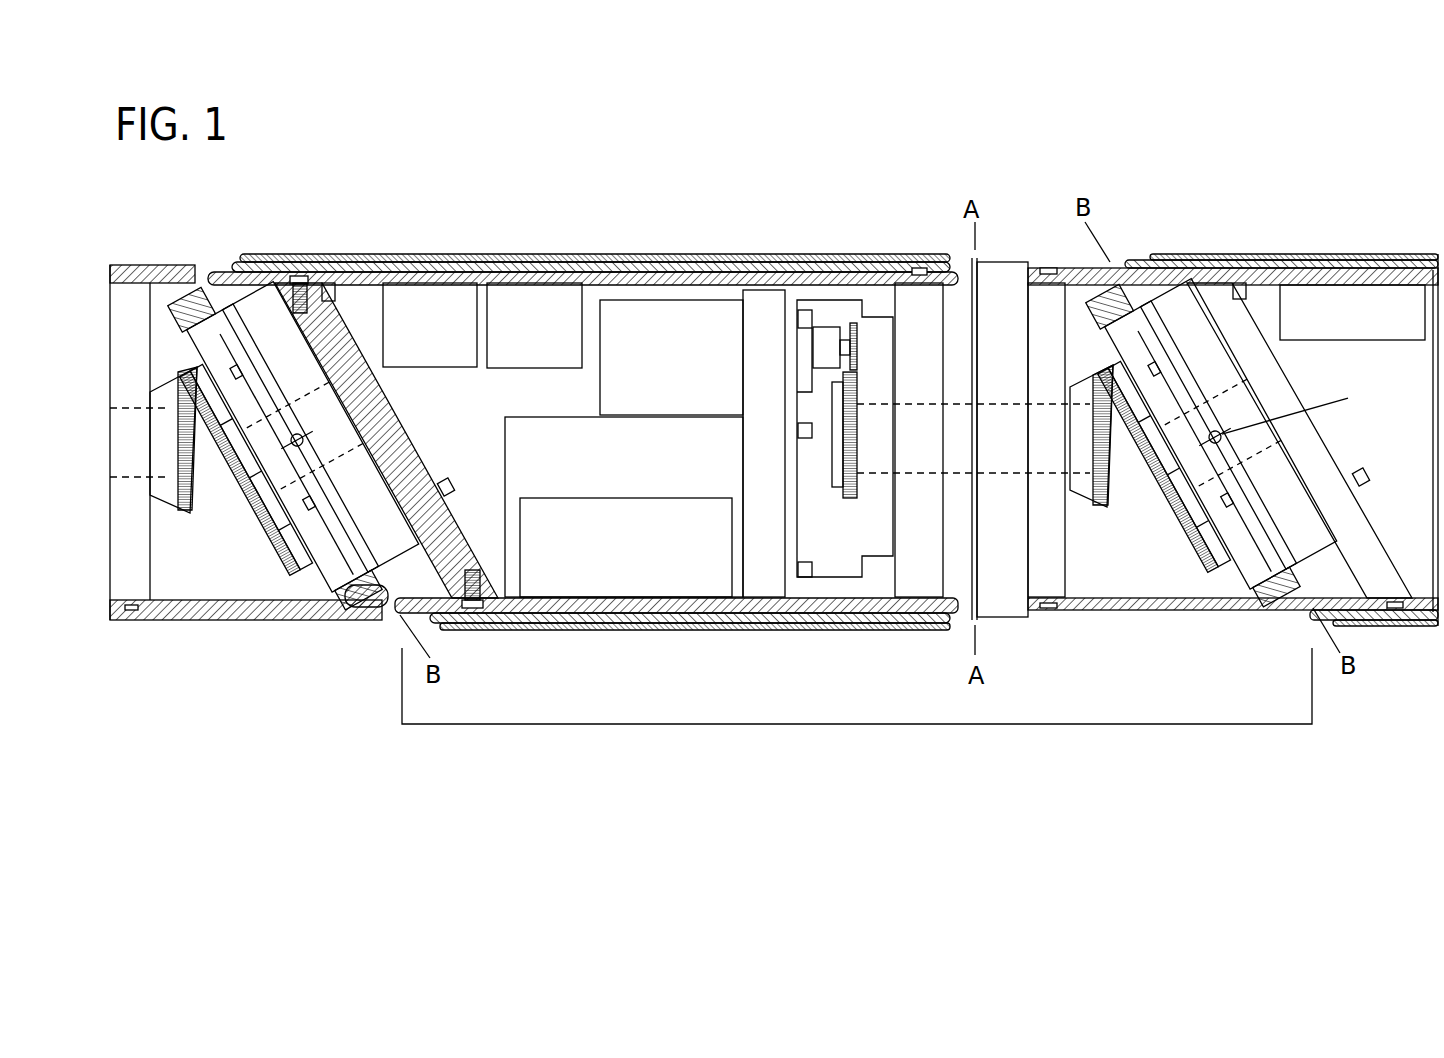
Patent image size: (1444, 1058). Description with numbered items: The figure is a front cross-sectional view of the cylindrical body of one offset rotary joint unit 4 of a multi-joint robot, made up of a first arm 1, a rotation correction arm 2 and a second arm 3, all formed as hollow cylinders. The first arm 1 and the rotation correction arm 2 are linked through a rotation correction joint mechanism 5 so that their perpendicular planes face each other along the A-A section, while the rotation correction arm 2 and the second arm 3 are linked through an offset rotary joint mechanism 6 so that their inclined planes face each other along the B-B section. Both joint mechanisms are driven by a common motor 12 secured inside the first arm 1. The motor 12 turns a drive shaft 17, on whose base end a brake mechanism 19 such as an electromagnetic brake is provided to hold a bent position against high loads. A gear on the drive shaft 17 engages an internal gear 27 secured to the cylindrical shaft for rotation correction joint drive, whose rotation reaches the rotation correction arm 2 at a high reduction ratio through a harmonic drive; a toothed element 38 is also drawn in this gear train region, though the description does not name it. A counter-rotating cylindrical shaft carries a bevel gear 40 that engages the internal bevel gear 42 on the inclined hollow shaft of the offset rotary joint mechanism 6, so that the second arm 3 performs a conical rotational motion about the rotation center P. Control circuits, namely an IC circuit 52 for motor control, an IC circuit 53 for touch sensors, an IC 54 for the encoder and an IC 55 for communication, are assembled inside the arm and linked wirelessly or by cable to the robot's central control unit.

The first arm 1 is at (527, 258).
The rotation correction arm 2 is at (1035, 257).
The second arm 3 is at (1362, 245).
The offset rotary joint unit 4 is at (857, 710).
The rotation correction joint mechanism 5 is at (995, 328).
The offset rotary joint mechanism 6 is at (1183, 322).
The motor 12 is at (535, 456).
The drive shaft 17 is at (847, 353).
The brake mechanism 19 is at (667, 312).
The internal gear 27 is at (918, 572).
The gear 38 is at (842, 478).
The bevel gear 40 is at (1097, 508).
The internal bevel gear 42 is at (1178, 505).
The IC circuit for motor control 52 is at (580, 575).
The IC circuit for touch sensors 53 is at (393, 310).
The IC for the encoder 54 is at (1292, 313).
The IC for communication 55 is at (497, 292).